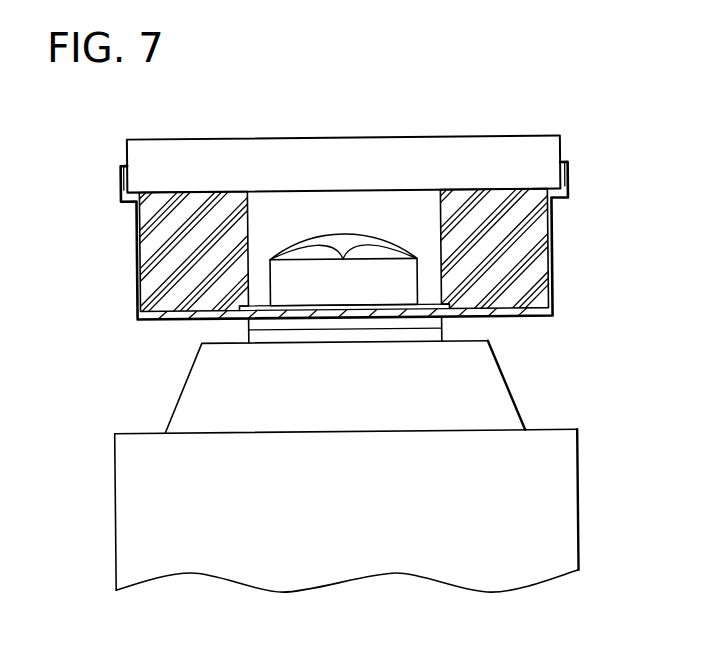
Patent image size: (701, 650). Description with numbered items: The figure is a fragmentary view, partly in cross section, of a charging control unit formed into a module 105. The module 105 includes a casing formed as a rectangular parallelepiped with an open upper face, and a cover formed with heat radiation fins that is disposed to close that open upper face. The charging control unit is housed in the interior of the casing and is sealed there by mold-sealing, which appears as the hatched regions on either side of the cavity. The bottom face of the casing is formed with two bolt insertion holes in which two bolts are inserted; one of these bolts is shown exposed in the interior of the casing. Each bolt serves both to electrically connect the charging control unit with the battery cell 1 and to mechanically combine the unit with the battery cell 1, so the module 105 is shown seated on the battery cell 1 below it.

The battery cell 1 is at (541, 412).
The module structure 105 is at (584, 147).